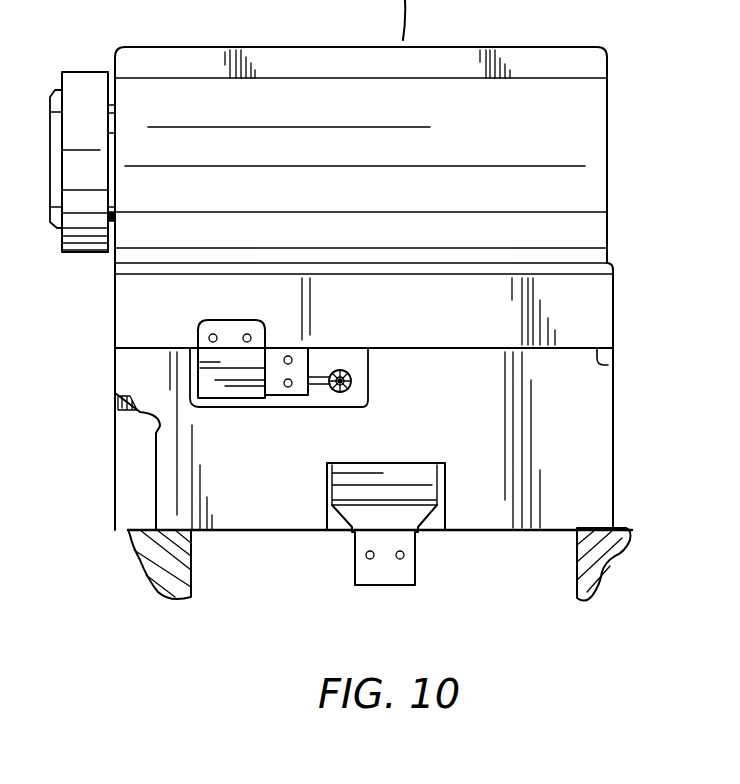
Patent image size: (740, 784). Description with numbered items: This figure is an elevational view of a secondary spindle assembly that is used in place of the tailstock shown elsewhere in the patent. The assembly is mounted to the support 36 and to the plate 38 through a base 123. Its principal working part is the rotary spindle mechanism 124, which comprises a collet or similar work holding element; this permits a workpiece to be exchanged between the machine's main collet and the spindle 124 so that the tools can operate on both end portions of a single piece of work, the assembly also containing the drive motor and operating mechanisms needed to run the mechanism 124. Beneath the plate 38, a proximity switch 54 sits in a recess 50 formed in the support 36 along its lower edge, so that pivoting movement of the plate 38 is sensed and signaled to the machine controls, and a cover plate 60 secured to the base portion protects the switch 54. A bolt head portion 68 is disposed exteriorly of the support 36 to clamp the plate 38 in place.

The rotary spindle mechanism 124 is at (80, 88).
The cover plate 60 is at (235, 325).
The proximity switch 54 is at (305, 368).
The recess 50 is at (366, 382).
The base 123 is at (593, 308).
The plate 38 is at (606, 364).
The support 36 is at (597, 420).
The head portion 68 is at (120, 405).